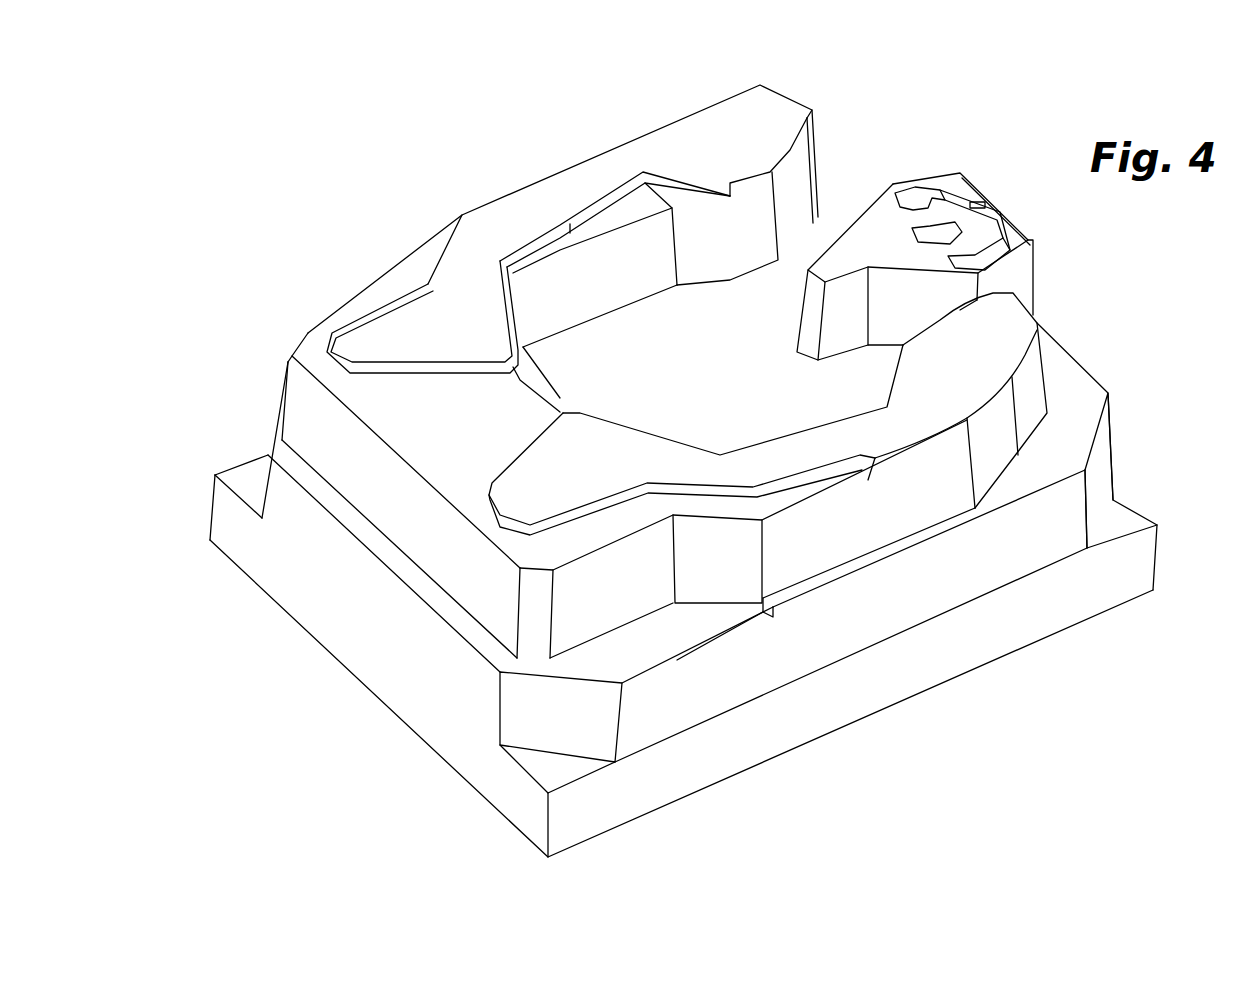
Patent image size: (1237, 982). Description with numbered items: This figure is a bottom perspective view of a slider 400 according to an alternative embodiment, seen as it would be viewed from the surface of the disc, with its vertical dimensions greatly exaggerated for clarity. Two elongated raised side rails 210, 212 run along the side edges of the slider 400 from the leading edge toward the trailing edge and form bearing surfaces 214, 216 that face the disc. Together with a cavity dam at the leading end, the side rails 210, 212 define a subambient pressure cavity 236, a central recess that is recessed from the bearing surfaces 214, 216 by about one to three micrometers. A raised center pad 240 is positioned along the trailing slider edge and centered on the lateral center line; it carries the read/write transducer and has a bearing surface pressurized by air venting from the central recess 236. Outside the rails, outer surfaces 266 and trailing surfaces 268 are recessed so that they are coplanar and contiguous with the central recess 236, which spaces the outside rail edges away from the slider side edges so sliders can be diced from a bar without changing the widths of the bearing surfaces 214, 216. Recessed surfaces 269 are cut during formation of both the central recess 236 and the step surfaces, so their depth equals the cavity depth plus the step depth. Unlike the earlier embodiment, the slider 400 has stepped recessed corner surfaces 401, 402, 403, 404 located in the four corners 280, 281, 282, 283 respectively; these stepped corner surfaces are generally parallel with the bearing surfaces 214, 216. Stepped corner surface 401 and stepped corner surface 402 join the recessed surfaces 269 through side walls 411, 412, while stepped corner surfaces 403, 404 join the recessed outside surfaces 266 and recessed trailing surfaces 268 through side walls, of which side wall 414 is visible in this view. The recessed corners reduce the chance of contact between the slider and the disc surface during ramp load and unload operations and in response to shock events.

The slider 400 is at (388, 152).
The side rail 210 is at (438, 315).
The side rail 212 is at (632, 462).
The bearing surface 214 is at (525, 215).
The bearing surface 216 is at (755, 472).
The subambient pressure cavity 236 is at (742, 350).
The center pad 240 is at (838, 237).
The outer surface 266 is at (950, 518).
The trailing surface 268 is at (1082, 395).
The recessed surface 269 is at (702, 630).
The corner 280 is at (548, 835).
The corner 281 is at (212, 540).
The corner 282 is at (842, 160).
The corner 283 is at (1150, 590).
The stepped recessed corner surface 401 is at (545, 765).
The stepped recessed corner surface 402 is at (232, 480).
The stepped recessed corner surface 403 is at (838, 148).
The stepped recessed corner surface 404 is at (1130, 512).
The side wall 411 is at (588, 718).
The side wall 412 is at (275, 500).
The side wall 414 is at (1097, 465).